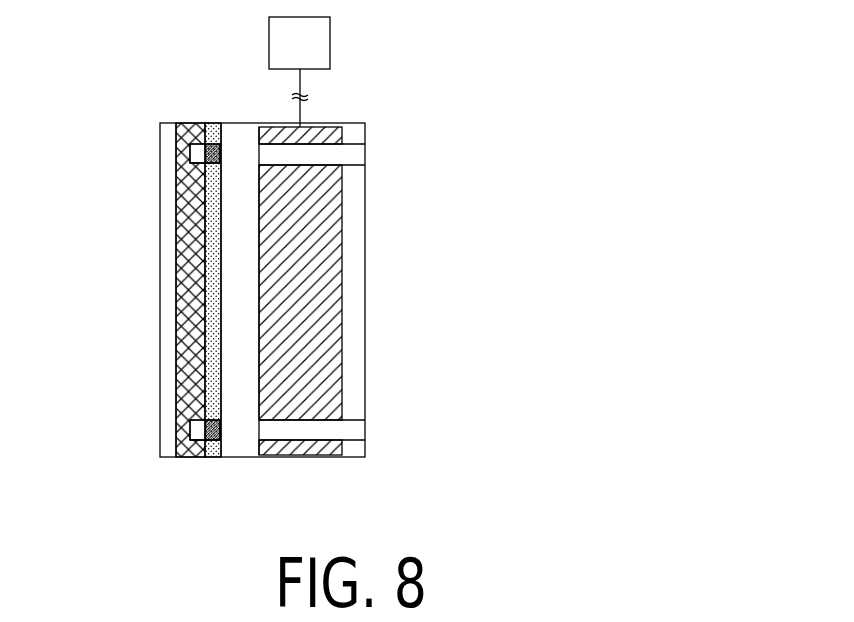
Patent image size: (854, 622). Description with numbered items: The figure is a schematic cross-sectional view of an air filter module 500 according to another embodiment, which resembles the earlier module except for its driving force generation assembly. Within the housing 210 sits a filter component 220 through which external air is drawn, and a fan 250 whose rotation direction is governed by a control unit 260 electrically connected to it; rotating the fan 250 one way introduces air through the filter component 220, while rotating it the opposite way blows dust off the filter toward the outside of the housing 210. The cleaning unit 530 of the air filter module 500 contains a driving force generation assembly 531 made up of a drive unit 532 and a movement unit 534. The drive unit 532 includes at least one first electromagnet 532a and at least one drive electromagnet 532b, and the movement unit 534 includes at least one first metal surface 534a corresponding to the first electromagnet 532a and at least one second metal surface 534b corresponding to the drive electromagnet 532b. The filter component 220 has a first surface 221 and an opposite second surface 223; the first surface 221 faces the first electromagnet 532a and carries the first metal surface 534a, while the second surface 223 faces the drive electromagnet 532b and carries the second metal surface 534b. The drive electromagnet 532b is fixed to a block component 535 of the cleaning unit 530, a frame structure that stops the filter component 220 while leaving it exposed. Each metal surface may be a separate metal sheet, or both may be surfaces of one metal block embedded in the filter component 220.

The housing 210 is at (170, 122).
The filter component 220 is at (178, 205).
The first surface 221 is at (222, 410).
The second surface 223 is at (207, 392).
The fan 250 is at (327, 445).
The control unit 260 is at (324, 43).
The air filter module 500 is at (597, 507).
The cleaning unit 530 is at (456, 295).
The driving force generation assembly 531 is at (415, 252).
The drive unit 532 is at (376, 252).
The first electromagnet 532a is at (220, 150).
The drive electromagnet 532b is at (201, 143).
The movement unit 534 is at (377, 296).
The first metal surface 534a is at (220, 153).
The second metal surface 534b is at (218, 158).
The block component 535 is at (205, 333).